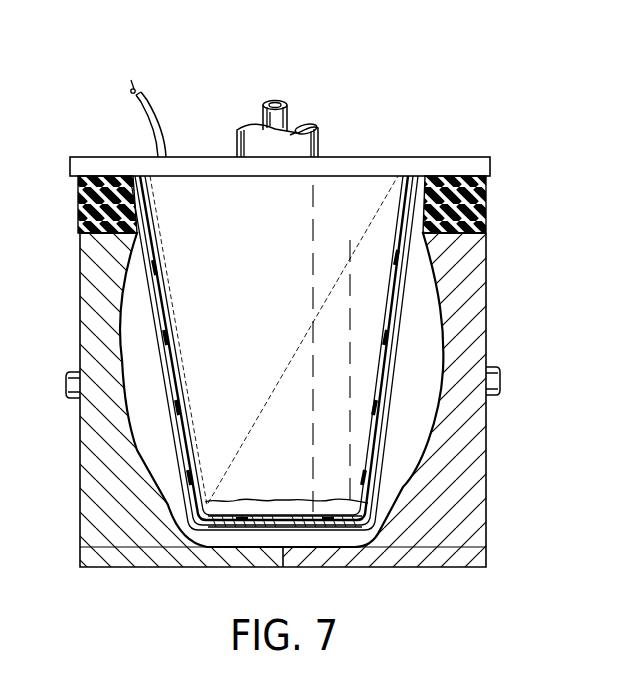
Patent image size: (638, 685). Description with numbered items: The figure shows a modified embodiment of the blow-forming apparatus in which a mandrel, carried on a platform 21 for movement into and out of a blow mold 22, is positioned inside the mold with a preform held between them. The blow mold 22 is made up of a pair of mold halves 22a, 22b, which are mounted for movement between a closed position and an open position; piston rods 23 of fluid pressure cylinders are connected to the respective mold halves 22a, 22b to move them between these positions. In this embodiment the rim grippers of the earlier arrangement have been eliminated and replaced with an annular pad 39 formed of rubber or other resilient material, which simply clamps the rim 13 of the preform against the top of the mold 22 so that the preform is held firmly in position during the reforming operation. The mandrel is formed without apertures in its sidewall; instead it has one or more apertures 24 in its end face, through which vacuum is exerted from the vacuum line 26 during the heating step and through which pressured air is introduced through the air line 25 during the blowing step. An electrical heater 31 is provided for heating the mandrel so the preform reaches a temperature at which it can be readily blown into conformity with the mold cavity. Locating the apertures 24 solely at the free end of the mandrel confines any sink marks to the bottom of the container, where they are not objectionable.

The rim 13 is at (420, 225).
The platform 21 is at (432, 157).
The blow mold 22 is at (536, 412).
The mold half 22a is at (82, 562).
The mold half 22b is at (484, 562).
The piston rod 23 is at (68, 378).
The aperture 24 is at (284, 527).
The air line 25 is at (272, 102).
The vacuum line 26 is at (314, 124).
The electrical heater 31 is at (152, 124).
The annular pad 39 is at (487, 216).